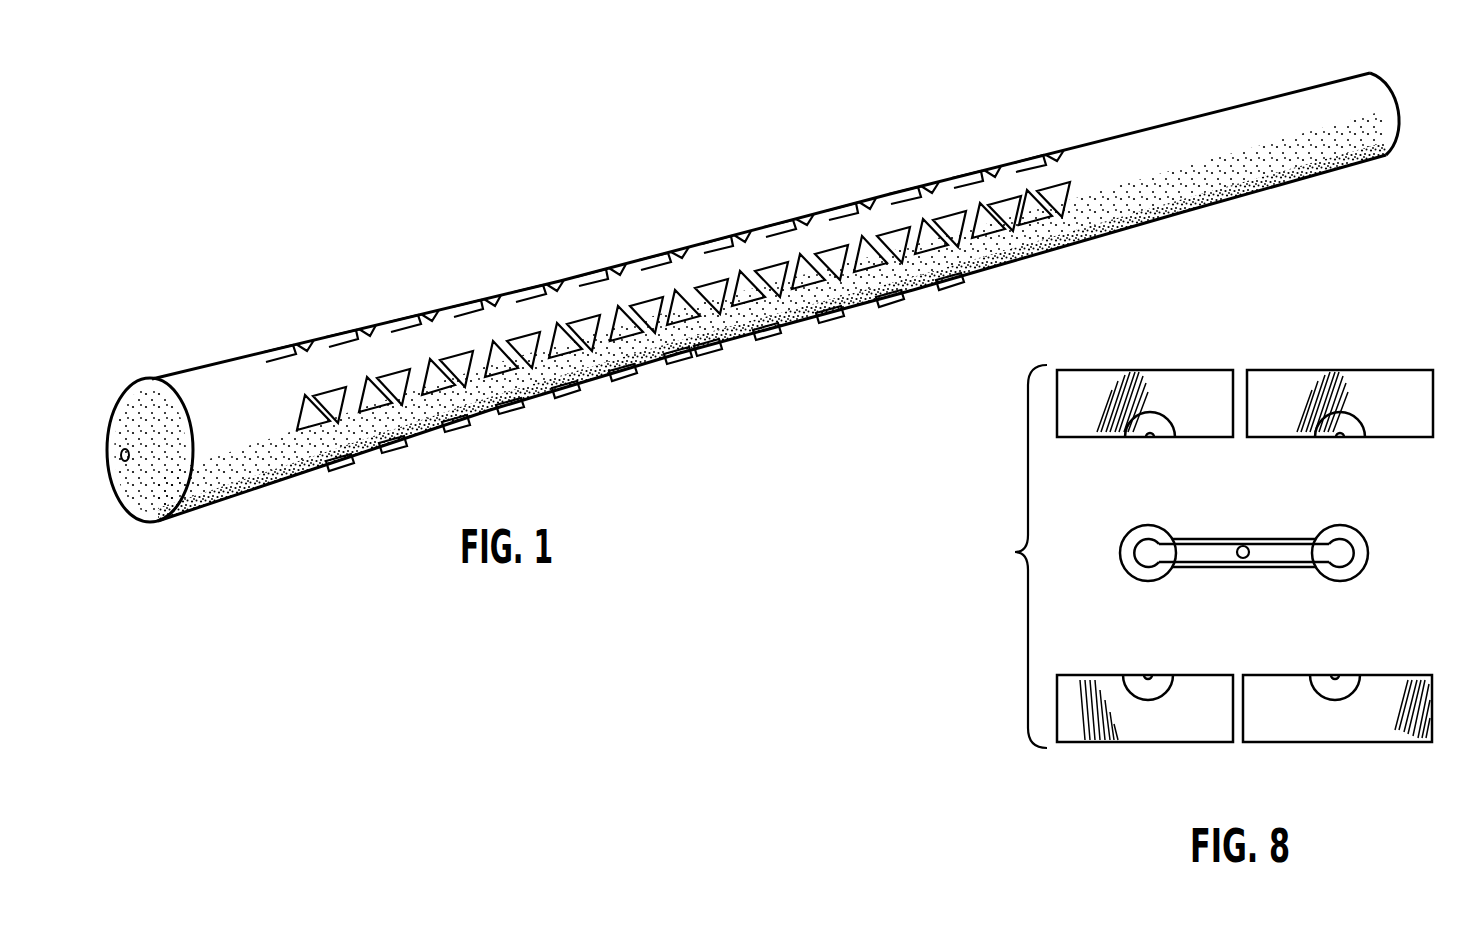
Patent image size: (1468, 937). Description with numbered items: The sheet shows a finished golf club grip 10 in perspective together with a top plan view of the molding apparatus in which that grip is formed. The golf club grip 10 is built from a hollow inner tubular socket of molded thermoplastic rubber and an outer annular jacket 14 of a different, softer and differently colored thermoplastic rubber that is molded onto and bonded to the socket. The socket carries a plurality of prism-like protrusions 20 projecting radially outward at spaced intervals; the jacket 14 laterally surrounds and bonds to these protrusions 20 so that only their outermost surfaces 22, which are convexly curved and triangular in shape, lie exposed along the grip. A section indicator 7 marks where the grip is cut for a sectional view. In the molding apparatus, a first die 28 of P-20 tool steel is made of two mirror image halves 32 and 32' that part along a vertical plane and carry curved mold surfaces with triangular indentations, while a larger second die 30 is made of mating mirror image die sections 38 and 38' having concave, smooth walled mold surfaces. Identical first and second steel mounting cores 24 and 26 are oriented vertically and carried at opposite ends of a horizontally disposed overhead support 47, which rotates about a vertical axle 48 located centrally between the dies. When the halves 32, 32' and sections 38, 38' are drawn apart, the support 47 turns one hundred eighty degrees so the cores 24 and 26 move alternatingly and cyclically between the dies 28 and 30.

In FIG. 1, the golf club grip 10 is at (968, 115).
In FIG. 1, the outer annular jacket 14 is at (1213, 140).
In FIG. 1, the protrusions 20 is at (955, 262).
In FIG. 1, the outermost surfaces 22 is at (932, 247).
In FIG. 1, the section line 7- 7 is at (703, 183).
In FIG. 8, the first mounting core 24 is at (1125, 540).
In FIG. 8, the second mounting core 26 is at (1352, 538).
In FIG. 8, the first die 28 is at (1000, 540).
In FIG. 8, the second die 30 is at (1405, 503).
In FIG. 8, the die half 32 is at (1145, 379).
In FIG. 8, the die section 38 is at (1340, 379).
In FIG. 8, the die half 32' is at (1145, 745).
In FIG. 8, the die section 38' is at (1337, 745).
In FIG. 8, the overhead support 47 is at (1278, 545).
In FIG. 8, the vertical axle 48 is at (1247, 560).